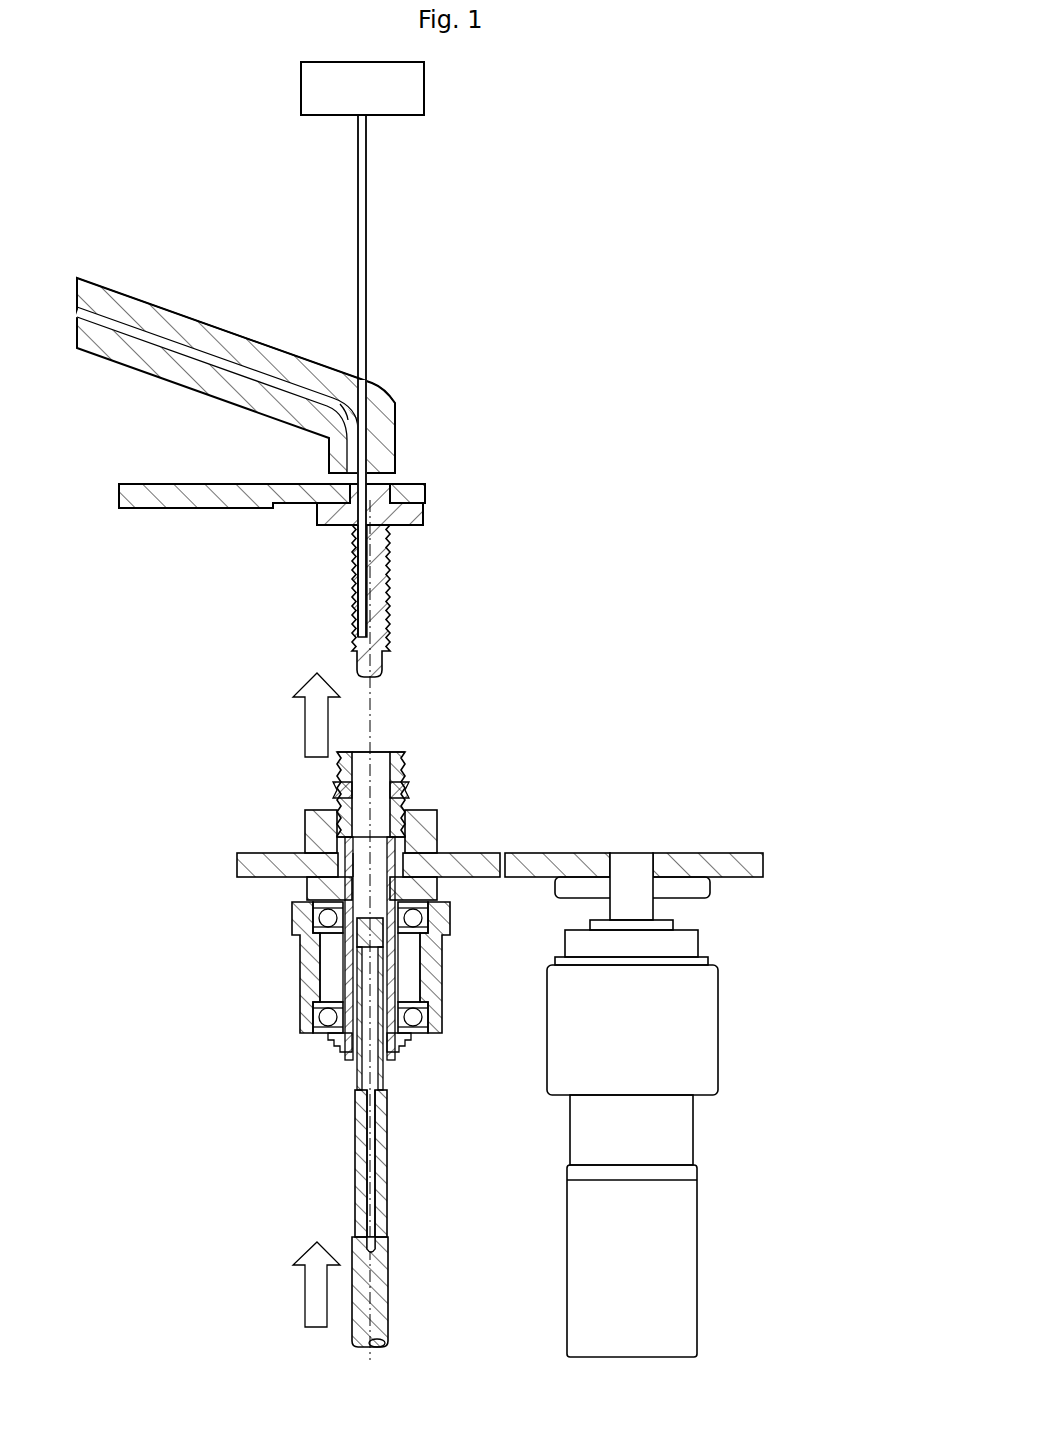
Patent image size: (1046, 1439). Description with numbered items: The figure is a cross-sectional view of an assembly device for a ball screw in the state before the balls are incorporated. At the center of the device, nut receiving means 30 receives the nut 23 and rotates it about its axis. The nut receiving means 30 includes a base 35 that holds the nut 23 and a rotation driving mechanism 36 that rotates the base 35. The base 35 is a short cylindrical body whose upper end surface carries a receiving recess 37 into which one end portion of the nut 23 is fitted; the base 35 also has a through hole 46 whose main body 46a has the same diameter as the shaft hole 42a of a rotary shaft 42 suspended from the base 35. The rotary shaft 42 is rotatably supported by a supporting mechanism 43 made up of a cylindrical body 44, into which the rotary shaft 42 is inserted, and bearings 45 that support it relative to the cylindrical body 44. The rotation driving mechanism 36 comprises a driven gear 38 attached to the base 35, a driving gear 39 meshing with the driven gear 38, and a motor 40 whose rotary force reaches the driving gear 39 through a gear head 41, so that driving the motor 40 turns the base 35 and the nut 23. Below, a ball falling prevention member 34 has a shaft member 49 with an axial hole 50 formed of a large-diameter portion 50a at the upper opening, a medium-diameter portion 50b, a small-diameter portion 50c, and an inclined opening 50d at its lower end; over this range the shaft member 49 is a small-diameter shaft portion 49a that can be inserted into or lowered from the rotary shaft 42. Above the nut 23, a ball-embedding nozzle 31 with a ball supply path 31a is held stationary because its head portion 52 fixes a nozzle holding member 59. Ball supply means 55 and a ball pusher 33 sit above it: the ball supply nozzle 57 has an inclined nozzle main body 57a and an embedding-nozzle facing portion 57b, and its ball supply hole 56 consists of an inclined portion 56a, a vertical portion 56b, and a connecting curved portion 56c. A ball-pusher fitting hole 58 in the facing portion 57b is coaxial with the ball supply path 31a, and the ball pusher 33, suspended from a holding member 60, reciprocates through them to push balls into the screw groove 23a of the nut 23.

The holding member 60 is at (427, 85).
The ball pusher 33 is at (370, 212).
The ball supply means 55 is at (272, 352).
The ball supply nozzle 57 is at (196, 393).
The nozzle main body 57a is at (152, 303).
The embedding-nozzle facing portion 57b is at (397, 446).
The ball-pusher fitting hole 58 is at (383, 400).
The ball supply hole 56 is at (217, 384).
The inclined portion 56a is at (157, 332).
The vertical portion 56b is at (350, 468).
The curved portion 56c is at (325, 413).
The nozzle holding member 59 is at (158, 503).
The head portion 52 is at (416, 528).
The ball-embedding nozzle 31 is at (373, 601).
The ball supply path 31a is at (353, 585).
The nut receiving means 30 is at (283, 750).
The nut 23 is at (392, 765).
The screw groove 23a is at (383, 762).
The receiving recess 37 is at (338, 791).
The base 35 is at (386, 831).
The through hole 46 is at (386, 855).
The main body 46a is at (420, 884).
The driven gear 38 is at (468, 860).
The axial hole 50 is at (346, 1054).
The large-diameter portion 50a is at (345, 882).
The medium-diameter portion 50b is at (360, 1062).
The small-diameter portion 50c is at (390, 1168).
The inclined opening 50d is at (390, 1255).
The shaft member 49 is at (406, 1218).
The small-diameter shaft portion 49a is at (388, 1122).
The ball falling prevention member 34 is at (353, 1163).
The supporting mechanism 43 is at (378, 996).
The cylindrical body 44 is at (446, 958).
The bearings 45 is at (436, 918).
The rotary shaft 42 is at (377, 967).
The shaft hole 42a is at (395, 983).
The rotation driving mechanism 36 is at (675, 1080).
The driving gear 39 is at (735, 852).
The gear head 41 is at (695, 1027).
The motor 40 is at (697, 1268).